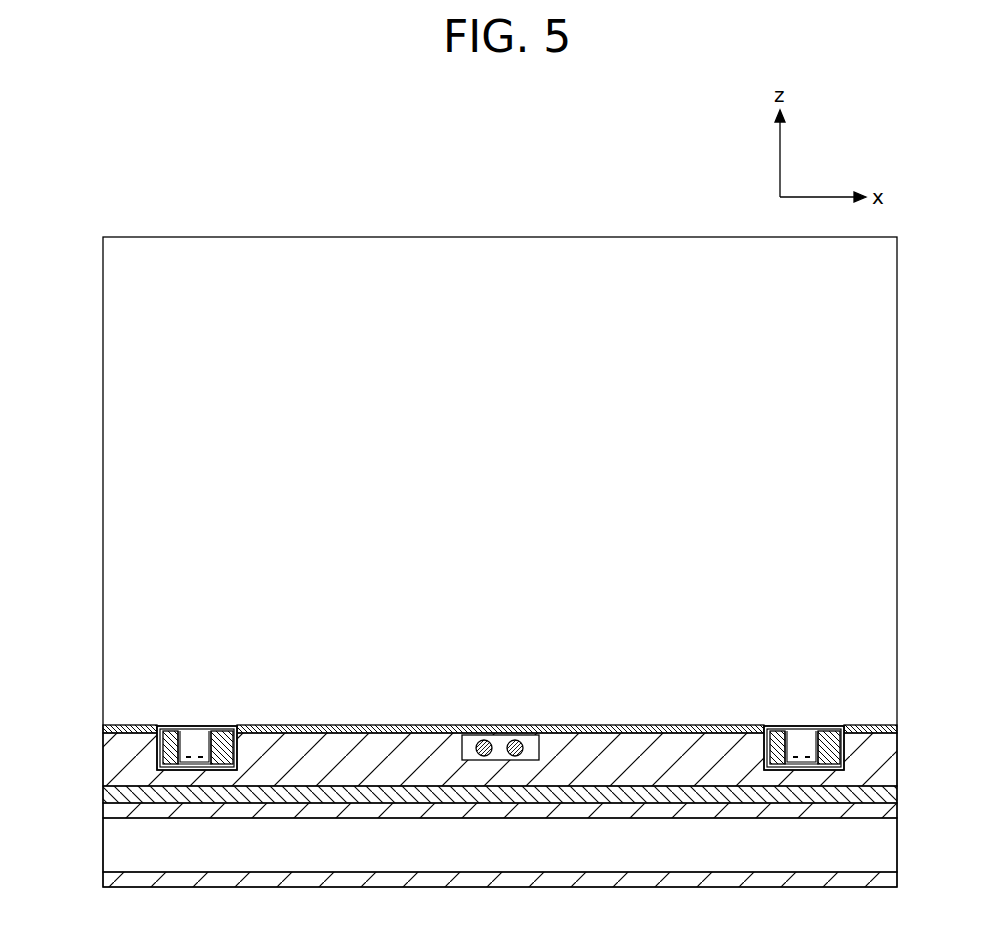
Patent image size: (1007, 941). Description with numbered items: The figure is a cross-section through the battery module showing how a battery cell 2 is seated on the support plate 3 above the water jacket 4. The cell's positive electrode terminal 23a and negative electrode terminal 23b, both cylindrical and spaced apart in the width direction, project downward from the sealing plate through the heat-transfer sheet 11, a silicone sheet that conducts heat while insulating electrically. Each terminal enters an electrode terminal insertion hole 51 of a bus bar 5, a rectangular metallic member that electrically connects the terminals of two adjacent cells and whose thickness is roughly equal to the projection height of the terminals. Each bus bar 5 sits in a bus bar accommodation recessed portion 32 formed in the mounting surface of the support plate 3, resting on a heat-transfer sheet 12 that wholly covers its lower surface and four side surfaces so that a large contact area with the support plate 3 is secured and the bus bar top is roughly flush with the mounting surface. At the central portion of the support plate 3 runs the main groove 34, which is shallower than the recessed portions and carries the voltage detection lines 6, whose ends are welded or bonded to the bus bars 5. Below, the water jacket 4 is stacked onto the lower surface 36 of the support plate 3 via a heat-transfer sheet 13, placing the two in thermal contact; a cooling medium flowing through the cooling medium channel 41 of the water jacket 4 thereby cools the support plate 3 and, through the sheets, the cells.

The battery cell 2 is at (490, 223).
The support plate 3 is at (890, 778).
The water jacket 4 is at (888, 880).
The bus bar 5 is at (173, 742).
The voltage detection line 6 is at (515, 740).
The heat-transfer sheet 11 is at (898, 728).
The heat-transfer sheet 12 is at (159, 767).
The heat-transfer sheet 13 is at (893, 807).
The positive electrode terminal 23a is at (200, 736).
The negative electrode terminal 23b is at (807, 738).
The bus bar accommodation recessed portion 32 is at (242, 750).
The main groove 34 is at (541, 752).
The lower surface 36 is at (106, 794).
The cooling medium channel 41 is at (888, 846).
The electrode terminal insertion hole 51 is at (172, 752).